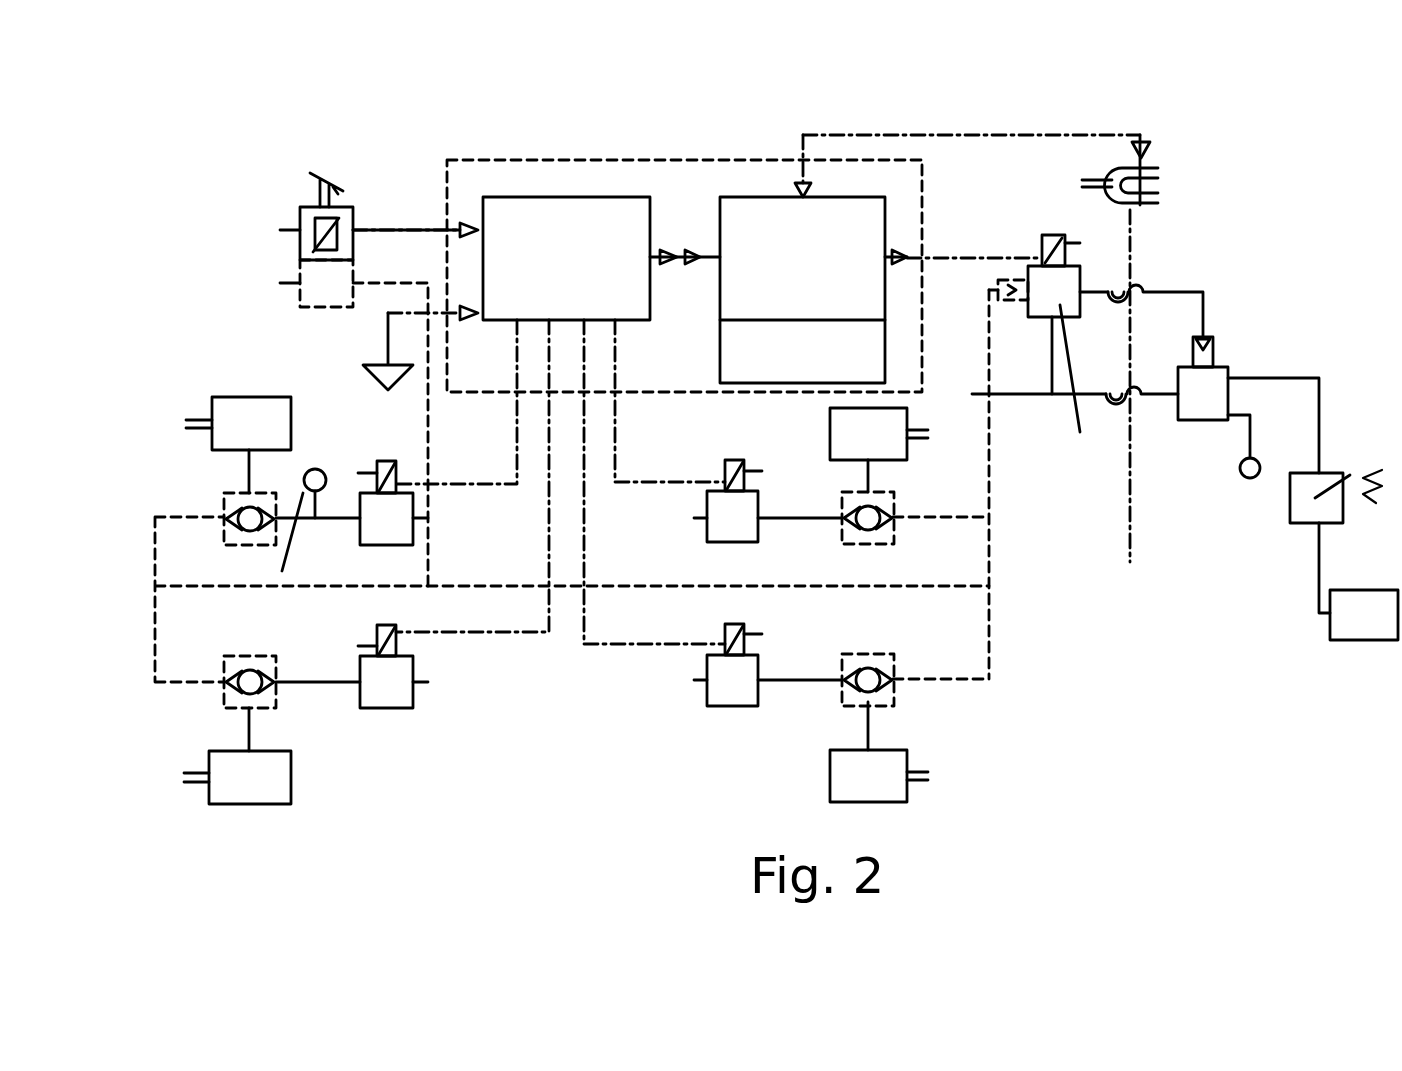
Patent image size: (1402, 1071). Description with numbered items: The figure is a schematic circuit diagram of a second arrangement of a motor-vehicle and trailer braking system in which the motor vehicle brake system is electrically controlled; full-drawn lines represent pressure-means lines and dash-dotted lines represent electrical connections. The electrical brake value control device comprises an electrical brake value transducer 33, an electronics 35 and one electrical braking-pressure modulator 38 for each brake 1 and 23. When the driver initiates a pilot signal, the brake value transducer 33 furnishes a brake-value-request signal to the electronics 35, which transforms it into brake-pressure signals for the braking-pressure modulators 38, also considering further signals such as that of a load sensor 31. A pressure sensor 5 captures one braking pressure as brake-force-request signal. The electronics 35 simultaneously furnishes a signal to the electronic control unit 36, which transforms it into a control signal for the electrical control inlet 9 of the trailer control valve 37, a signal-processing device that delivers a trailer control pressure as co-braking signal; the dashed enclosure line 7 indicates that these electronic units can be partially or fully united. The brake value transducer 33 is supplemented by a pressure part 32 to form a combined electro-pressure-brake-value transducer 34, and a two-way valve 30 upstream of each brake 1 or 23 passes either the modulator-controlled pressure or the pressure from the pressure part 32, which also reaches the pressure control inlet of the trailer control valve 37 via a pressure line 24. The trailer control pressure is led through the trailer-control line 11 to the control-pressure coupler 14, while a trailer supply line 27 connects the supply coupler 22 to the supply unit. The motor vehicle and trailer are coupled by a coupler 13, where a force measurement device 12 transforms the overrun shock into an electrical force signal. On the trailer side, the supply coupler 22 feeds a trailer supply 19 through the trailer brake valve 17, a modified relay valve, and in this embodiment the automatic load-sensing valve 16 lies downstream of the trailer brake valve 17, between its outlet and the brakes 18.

The brake 1 is at (233, 398).
The pressure sensor 5 is at (282, 571).
The dashed enclosure line 7 is at (483, 152).
The electrical control inlet 9 is at (1052, 237).
The trailer-control line 11 is at (1097, 290).
The force measurement device 12 is at (1143, 150).
The coupler 13 is at (1160, 174).
The control-pressure coupler 14 is at (1140, 283).
The automatic load-sensing valve 16 is at (1326, 472).
The trailer brake valve 17 is at (1213, 372).
The brakes 18 is at (1390, 597).
The trailer supply 19 is at (1252, 478).
The supply coupler 22 is at (1130, 422).
The brake 23 is at (880, 452).
The pressure line 24 is at (989, 490).
The trailer supply line 27 is at (1085, 396).
The 2-way valve 30 is at (222, 500).
The load sensor 31 is at (382, 388).
The pressure part 32 is at (307, 277).
The electrical brake value transducer 33 is at (307, 217).
The combined electro-pressure-brake-value transducer 34 is at (303, 203).
The electronics 35 is at (508, 197).
The electronic control unit 36 is at (740, 197).
The trailer control valve 37 is at (1082, 272).
The electrical braking-pressure modulator 38 is at (382, 538).